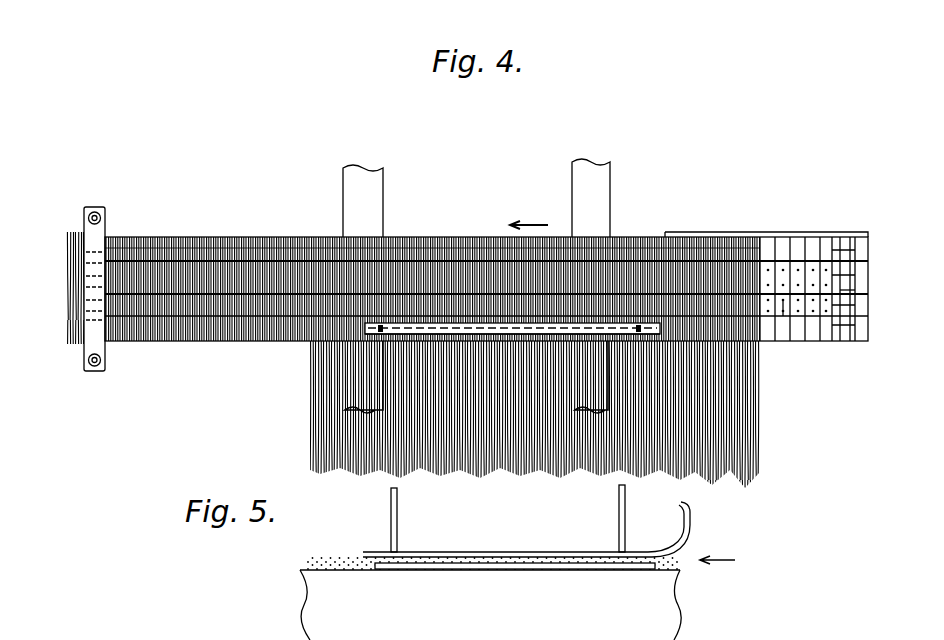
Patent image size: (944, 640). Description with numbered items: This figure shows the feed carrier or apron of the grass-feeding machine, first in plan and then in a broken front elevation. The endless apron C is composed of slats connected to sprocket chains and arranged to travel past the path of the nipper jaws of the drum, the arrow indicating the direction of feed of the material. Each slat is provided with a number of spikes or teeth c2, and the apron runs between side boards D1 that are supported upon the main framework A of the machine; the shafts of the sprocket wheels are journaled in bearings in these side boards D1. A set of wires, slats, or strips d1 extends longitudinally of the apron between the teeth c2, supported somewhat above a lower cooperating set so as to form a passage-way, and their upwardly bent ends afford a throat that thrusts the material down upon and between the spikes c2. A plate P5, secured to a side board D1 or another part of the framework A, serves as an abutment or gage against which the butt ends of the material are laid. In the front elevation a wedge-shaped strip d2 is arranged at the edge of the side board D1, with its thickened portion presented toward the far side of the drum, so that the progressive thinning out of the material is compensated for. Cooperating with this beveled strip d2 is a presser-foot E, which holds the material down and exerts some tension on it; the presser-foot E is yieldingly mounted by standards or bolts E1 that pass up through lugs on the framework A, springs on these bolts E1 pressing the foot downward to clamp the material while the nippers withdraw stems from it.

In FIG. 4, the framework A is at (373, 197).
In FIG. 4, the endless apron C is at (800, 282).
In FIG. 4, the plate P5 is at (780, 232).
In FIG. 4, the wires, slats, or strips d1 is at (783, 300).
In FIG. 4, the spikes or teeth c2 is at (850, 290).
In FIG. 4, the presser-foot E is at (498, 337).
In FIG. 5, the presser-foot E is at (555, 552).
In FIG. 5, the standards or bolts E1 is at (394, 532).
In FIG. 4, the wedge-shaped strip d2 is at (442, 337).
In FIG. 5, the wedge-shaped strip d2 is at (426, 570).
In FIG. 5, the side boards D1 is at (490, 605).